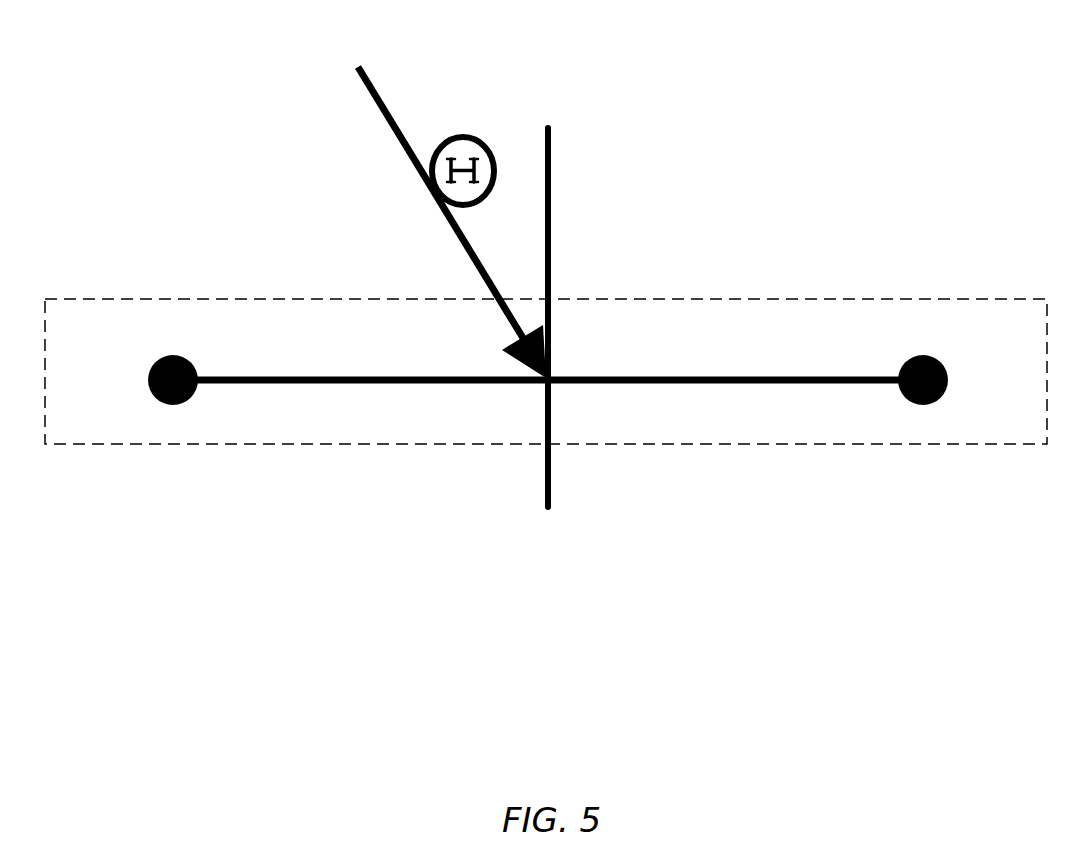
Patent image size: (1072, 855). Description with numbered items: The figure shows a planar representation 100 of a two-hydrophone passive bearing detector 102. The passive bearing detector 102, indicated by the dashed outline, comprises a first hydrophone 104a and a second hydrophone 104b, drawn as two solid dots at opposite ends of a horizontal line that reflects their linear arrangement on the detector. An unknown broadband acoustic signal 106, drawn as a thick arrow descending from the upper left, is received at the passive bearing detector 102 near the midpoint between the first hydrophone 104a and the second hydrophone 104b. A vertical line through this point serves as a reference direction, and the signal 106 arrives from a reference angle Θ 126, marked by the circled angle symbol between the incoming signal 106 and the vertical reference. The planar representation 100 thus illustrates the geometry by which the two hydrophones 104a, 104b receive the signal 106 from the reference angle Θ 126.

The planar representation 100 is at (767, 88).
The passive bearing detector 102 is at (696, 283).
The first hydrophone 104a is at (173, 355).
The second hydrophone 104b is at (923, 355).
The unknown broadband acoustic signal 106 is at (358, 67).
The reference angle Θ 126 is at (460, 135).